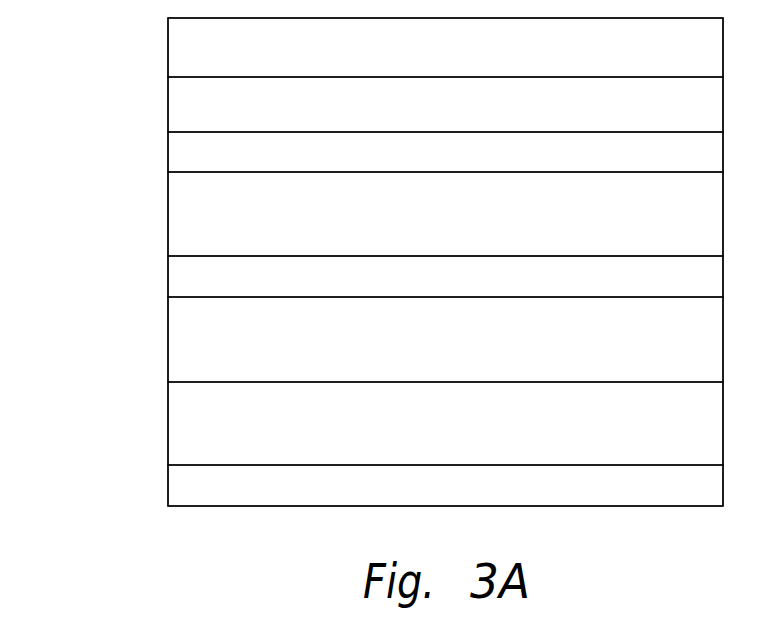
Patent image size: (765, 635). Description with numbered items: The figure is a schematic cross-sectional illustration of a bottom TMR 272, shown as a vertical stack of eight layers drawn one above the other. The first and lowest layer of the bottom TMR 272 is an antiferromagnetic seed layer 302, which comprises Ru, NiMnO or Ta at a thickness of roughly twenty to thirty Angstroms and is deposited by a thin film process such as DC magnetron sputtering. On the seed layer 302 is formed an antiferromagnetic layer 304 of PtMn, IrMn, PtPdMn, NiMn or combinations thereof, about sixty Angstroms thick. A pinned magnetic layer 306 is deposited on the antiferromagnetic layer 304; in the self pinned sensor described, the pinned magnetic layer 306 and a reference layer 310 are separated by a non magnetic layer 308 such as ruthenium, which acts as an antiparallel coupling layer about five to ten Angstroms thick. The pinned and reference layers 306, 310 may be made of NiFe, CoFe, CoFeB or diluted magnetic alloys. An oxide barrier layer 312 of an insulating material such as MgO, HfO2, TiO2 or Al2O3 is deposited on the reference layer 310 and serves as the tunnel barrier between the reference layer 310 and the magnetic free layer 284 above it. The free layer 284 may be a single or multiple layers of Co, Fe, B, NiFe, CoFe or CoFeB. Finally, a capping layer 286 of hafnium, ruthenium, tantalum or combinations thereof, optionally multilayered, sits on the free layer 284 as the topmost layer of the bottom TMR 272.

The bottom TMR 272 is at (108, 64).
The capping layer 286 is at (435, 59).
The free layer 284 is at (435, 114).
The oxide barrier layer 312 is at (435, 162).
The reference layer 310 is at (435, 227).
The non magnetic layer 308 is at (435, 287).
The pinned magnetic layer 306 is at (435, 353).
The antiferromagnetic layer 304 is at (435, 434).
The antiferromagnetic seed layer 302 is at (435, 497).